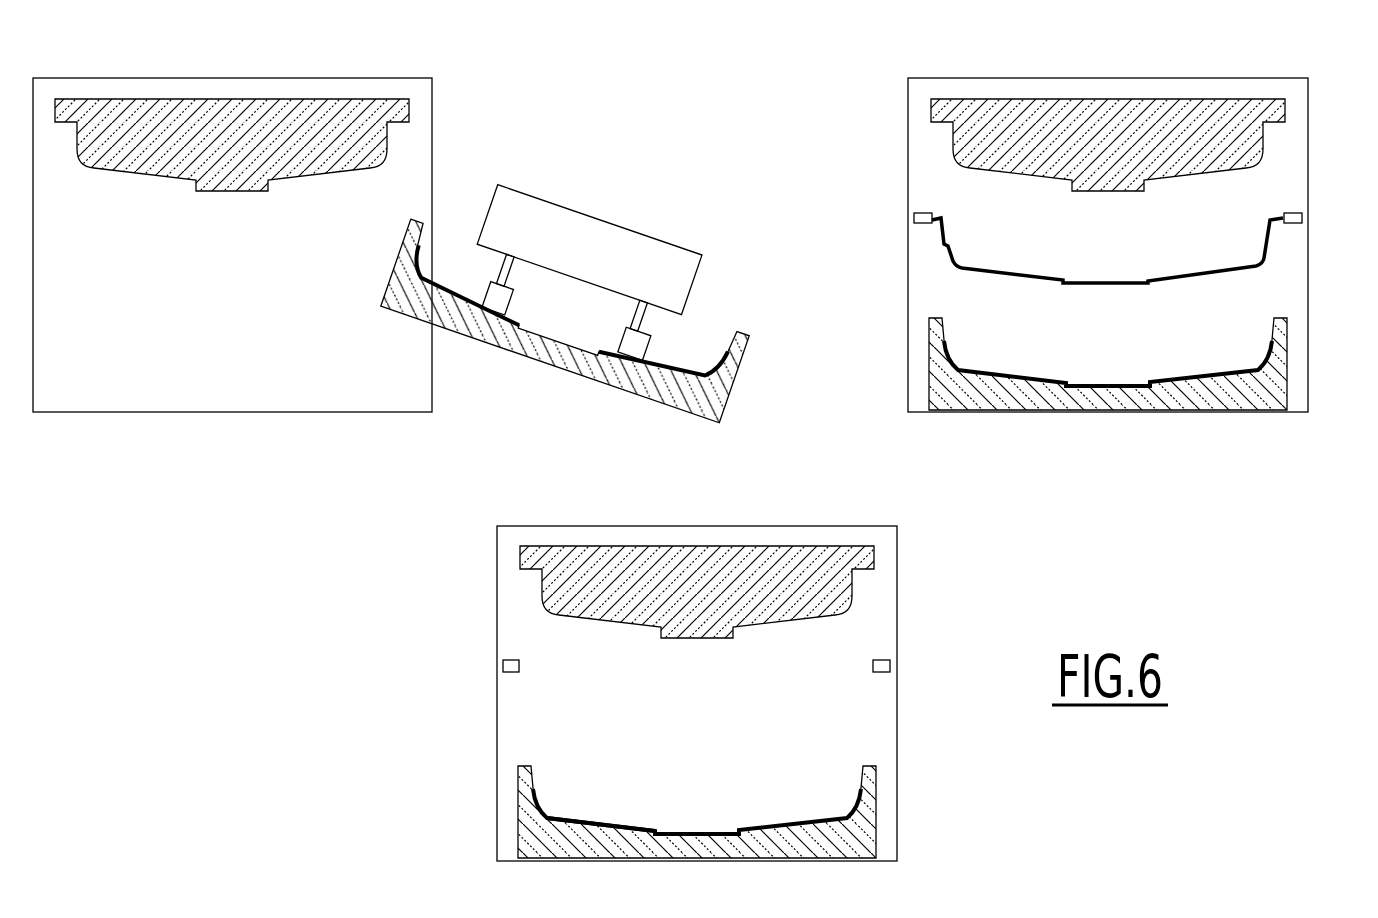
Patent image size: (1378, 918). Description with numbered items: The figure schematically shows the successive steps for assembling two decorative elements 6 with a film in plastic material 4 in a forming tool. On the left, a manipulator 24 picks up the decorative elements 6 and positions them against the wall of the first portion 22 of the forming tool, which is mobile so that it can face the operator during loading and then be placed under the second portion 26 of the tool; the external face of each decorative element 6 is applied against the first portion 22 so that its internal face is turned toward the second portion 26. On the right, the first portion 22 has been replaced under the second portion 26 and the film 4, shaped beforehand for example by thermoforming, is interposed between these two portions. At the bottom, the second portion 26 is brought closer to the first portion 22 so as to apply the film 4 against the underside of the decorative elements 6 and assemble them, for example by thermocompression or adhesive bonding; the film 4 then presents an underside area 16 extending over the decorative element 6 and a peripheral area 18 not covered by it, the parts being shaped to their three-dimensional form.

The film in plastic material 4 is at (1228, 277).
The decorative element 6 is at (470, 305).
The underside area 16 is at (600, 820).
The peripheral area 18 is at (658, 832).
The first portion of the forming tool 22 is at (717, 403).
The manipulator 24 is at (625, 240).
The second portion of the tool 26 is at (377, 138).